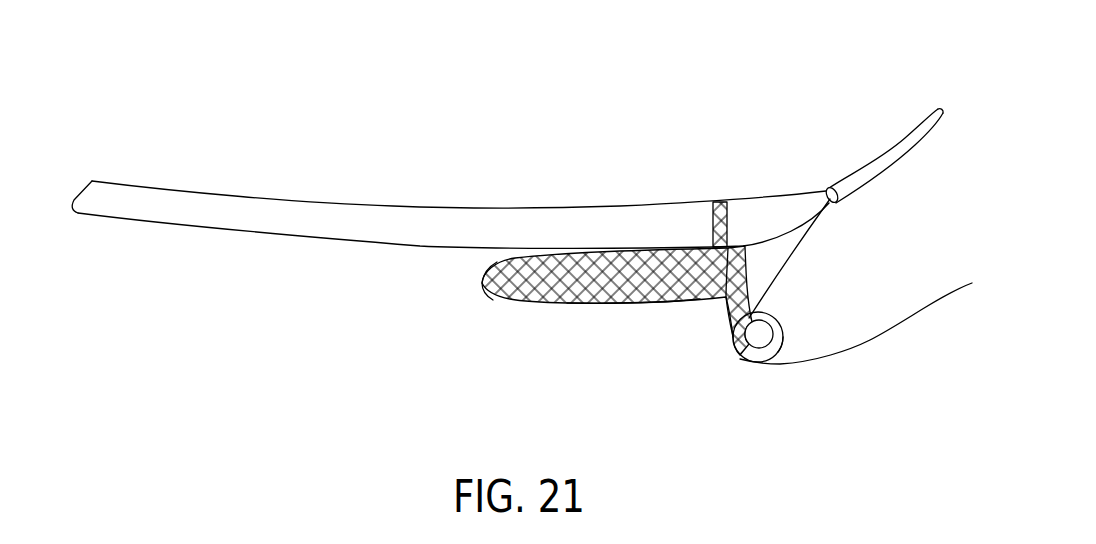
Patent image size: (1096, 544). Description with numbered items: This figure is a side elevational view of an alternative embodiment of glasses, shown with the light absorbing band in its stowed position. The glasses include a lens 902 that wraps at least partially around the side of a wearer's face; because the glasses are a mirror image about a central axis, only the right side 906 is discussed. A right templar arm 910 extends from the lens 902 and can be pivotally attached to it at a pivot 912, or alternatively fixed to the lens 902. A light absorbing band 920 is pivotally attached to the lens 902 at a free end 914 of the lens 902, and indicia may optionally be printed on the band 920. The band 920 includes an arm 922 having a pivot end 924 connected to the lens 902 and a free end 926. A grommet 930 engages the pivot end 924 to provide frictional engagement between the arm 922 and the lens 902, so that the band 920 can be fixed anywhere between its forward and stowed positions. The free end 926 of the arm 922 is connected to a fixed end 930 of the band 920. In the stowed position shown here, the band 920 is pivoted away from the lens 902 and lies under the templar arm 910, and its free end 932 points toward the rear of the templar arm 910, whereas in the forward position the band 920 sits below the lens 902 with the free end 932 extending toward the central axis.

The lens 902 is at (890, 168).
The right side 906 is at (836, 187).
The right templar arm 910 is at (233, 192).
The pivot 912 is at (790, 196).
The free end 914 is at (762, 361).
The light absorbing band 920 is at (483, 287).
The arm 922 is at (747, 314).
The pivot end 924 is at (737, 358).
The free end 926 is at (747, 250).
The grommet 930 is at (690, 302).
The free end 932 is at (493, 301).